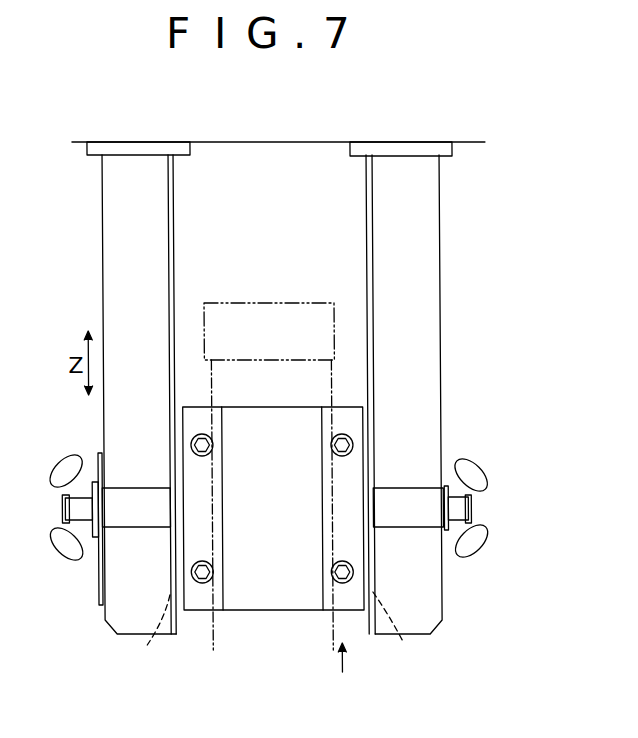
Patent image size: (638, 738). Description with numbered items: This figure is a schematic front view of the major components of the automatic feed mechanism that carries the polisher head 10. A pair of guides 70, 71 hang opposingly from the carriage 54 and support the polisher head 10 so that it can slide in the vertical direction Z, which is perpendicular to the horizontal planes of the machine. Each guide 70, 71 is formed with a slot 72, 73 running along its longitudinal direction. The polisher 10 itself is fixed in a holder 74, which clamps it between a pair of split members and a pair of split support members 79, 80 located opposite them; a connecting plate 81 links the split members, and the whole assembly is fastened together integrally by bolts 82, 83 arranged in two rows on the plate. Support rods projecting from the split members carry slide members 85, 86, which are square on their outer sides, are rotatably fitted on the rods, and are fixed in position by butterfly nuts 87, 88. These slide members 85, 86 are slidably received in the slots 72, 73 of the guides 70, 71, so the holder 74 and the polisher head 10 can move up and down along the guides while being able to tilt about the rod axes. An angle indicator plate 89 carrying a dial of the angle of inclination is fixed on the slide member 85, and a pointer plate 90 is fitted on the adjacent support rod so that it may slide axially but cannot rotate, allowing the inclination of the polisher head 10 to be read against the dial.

The polisher head 10 is at (271, 294).
The carriage 54 is at (466, 138).
The guide 70 is at (100, 291).
The guide 71 is at (437, 291).
The slot 72 is at (152, 636).
The slot 73 is at (399, 634).
The holder 74 is at (342, 674).
The split support member 79 is at (194, 603).
The split support member 80 is at (346, 605).
The connecting plate 81 is at (264, 603).
The bolt 82 is at (187, 442).
The bolt 83 is at (350, 445).
The slide member 85 is at (127, 492).
The slide member 86 is at (419, 495).
The butterfly nut 87 is at (52, 545).
The butterfly nut 88 is at (475, 480).
The angle indicator plate 89 is at (96, 598).
The pointer plate 90 is at (89, 480).